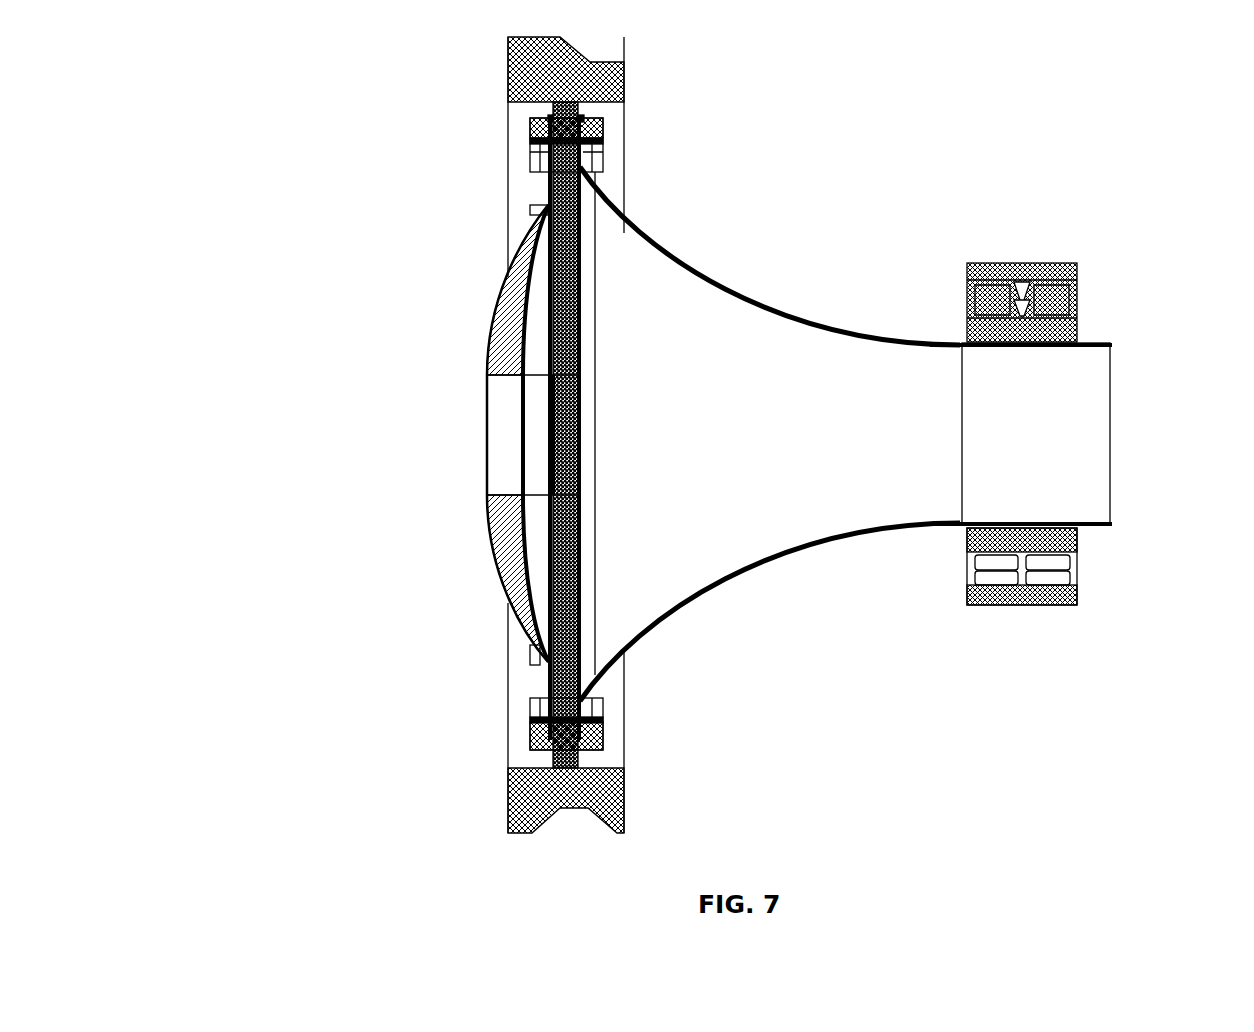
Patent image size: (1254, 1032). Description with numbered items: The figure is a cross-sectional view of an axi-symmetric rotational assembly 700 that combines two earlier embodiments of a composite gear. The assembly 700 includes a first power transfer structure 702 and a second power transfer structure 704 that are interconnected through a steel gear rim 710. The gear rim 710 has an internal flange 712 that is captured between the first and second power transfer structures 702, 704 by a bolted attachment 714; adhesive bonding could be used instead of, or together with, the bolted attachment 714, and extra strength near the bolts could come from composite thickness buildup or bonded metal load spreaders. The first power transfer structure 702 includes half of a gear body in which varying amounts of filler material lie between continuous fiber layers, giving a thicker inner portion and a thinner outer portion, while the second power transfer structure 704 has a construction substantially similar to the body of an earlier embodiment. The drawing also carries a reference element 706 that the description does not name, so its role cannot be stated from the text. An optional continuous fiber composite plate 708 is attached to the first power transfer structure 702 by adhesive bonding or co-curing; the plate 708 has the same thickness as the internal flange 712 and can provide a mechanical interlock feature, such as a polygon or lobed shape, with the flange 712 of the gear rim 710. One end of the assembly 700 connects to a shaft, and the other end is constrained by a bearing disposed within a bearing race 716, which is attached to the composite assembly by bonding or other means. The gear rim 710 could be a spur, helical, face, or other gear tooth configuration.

The axi-symmetric rotational assembly 700 is at (186, 265).
The first power transfer structure 702 is at (414, 514).
The second power transfer structure 704 is at (493, 297).
The housing 706 is at (570, 495).
The continuous fiber composite plate 708 is at (600, 757).
The steel gear rim 710 is at (820, 547).
The internal flange 712 is at (968, 590).
The bolted attachment 714 is at (508, 465).
The bearing race 716 is at (1090, 415).